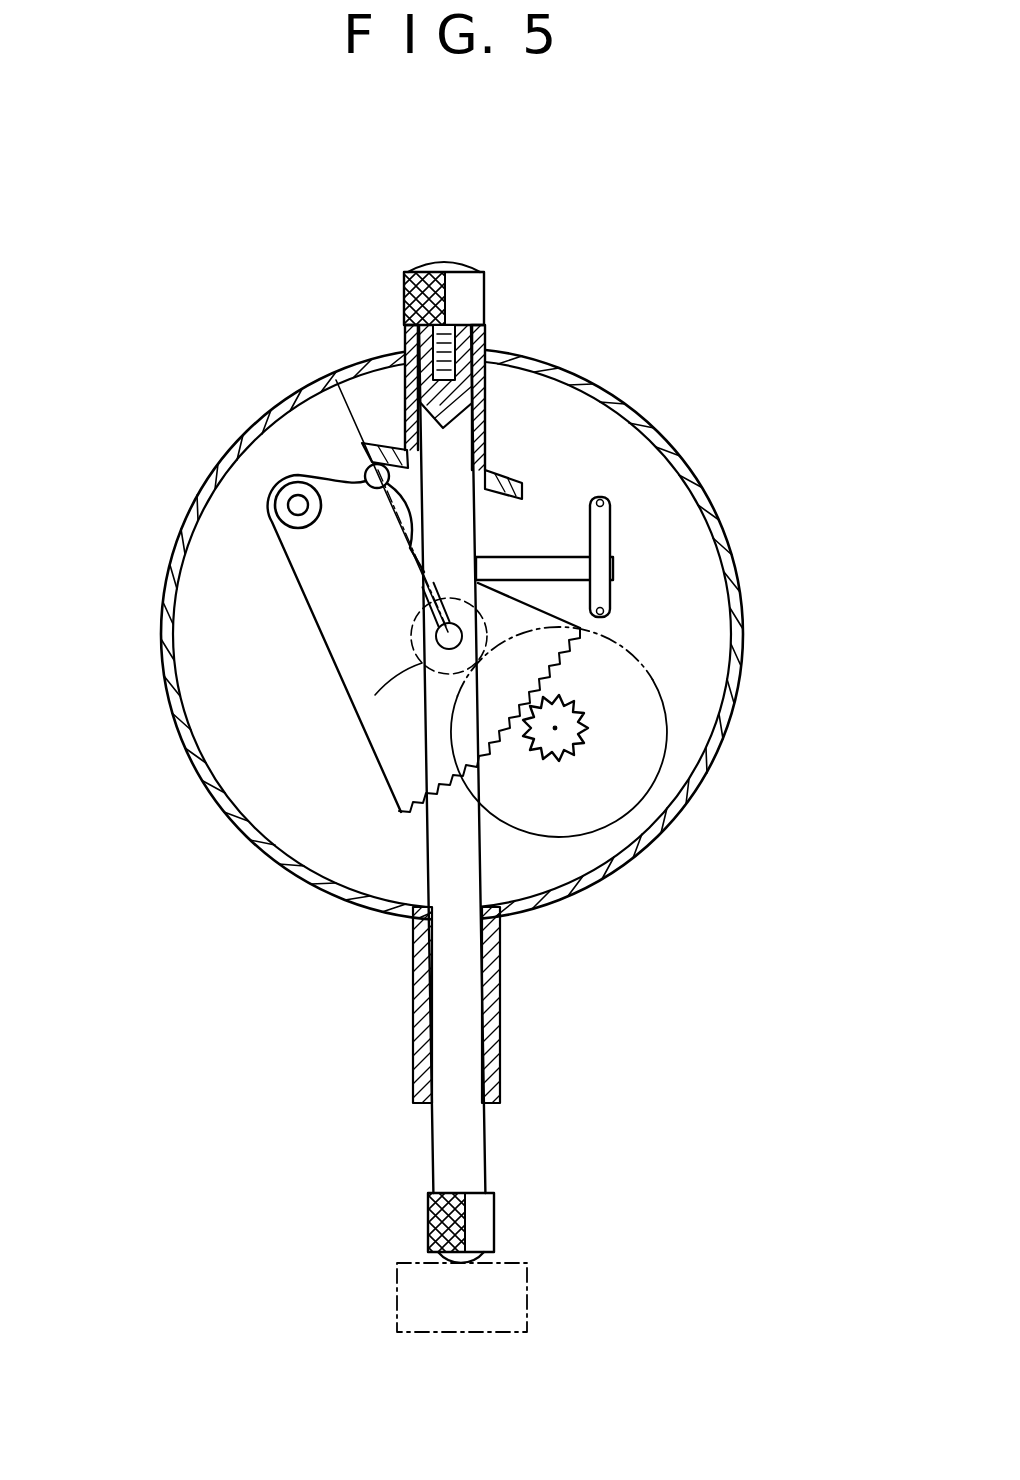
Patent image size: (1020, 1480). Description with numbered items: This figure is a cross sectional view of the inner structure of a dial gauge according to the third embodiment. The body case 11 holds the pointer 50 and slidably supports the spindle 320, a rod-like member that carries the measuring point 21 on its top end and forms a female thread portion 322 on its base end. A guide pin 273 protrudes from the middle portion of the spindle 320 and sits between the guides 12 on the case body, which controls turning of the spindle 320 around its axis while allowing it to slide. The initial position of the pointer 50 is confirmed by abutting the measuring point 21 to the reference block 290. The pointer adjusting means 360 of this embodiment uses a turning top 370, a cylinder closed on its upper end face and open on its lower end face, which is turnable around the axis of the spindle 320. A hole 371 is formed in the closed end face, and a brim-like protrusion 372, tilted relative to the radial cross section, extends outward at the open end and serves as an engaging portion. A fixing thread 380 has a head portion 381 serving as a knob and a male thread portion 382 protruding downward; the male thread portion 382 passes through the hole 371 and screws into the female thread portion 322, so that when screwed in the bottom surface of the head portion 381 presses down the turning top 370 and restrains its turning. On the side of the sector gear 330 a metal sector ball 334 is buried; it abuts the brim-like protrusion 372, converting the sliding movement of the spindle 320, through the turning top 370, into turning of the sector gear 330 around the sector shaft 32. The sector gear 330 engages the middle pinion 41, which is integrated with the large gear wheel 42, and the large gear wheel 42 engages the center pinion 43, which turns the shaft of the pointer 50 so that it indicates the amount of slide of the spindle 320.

The body case 11 is at (737, 564).
The guides 12 is at (598, 522).
The measuring point 21 is at (480, 1218).
The sector shaft 32 is at (296, 505).
The middle pinion 41 is at (553, 745).
The large gear wheel 42 is at (620, 796).
The center pinion 43 is at (375, 695).
The pointer 50 is at (350, 412).
The guide pin 273 is at (597, 568).
The reference block 290 is at (515, 1303).
The spindle 320 is at (455, 880).
The female thread portion 322 is at (487, 332).
The sector gear 330 is at (303, 560).
The sector ball 334 is at (372, 472).
The pointer adjusting means 360 is at (500, 400).
The turning top 370 is at (420, 385).
The hole 371 is at (447, 264).
The brim-like protrusion 372 is at (518, 482).
The fixing thread 380 is at (470, 290).
The head portion 381 is at (408, 285).
The male thread portion 382 is at (432, 345).